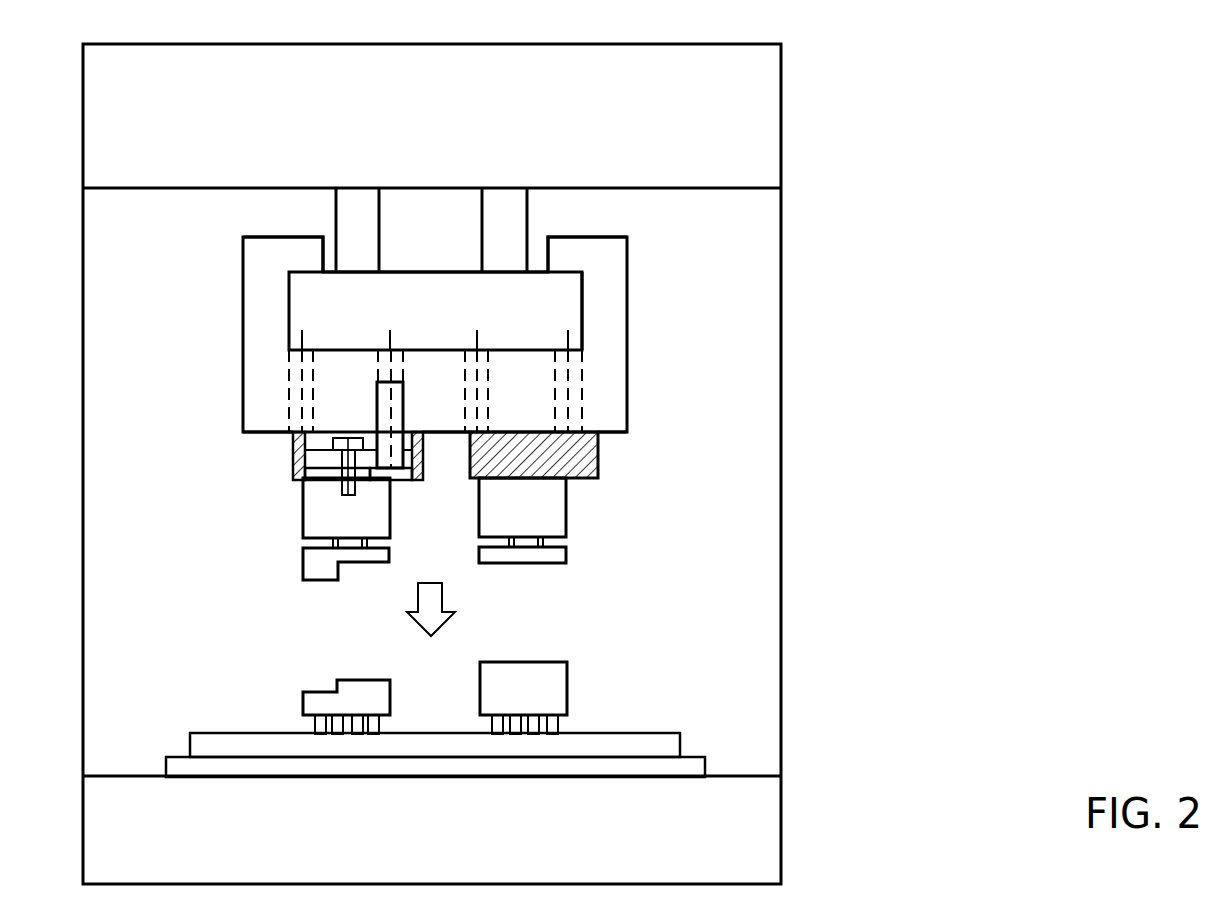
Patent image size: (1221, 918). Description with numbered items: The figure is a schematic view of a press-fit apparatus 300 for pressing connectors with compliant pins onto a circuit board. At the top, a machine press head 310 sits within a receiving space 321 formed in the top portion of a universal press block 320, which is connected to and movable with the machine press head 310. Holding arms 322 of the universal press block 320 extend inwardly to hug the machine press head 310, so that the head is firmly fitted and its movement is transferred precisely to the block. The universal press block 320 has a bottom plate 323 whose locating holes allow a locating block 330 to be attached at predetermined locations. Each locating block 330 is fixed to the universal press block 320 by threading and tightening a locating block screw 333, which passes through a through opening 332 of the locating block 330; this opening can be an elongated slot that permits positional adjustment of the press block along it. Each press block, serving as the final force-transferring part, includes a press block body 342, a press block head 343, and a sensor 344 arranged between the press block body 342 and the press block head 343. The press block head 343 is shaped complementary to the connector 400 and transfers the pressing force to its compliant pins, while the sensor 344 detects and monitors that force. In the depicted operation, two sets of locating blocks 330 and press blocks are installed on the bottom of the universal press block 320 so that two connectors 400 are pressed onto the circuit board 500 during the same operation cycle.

The press-fit apparatus 300 is at (800, 116).
The machine press head 310 is at (421, 322).
The universal press block 320 is at (627, 281).
The receiving space 321 is at (582, 310).
The holding arm 322 is at (273, 248).
The bottom plate 323 is at (613, 437).
The locating block 330 is at (292, 455).
The through opening 332 is at (327, 460).
The locating block screw 333 is at (403, 408).
The press block body 342 is at (349, 524).
The press block head 343 is at (320, 572).
The sensor 344 is at (338, 547).
The connector 400 is at (344, 709).
The circuit board 500 is at (630, 740).